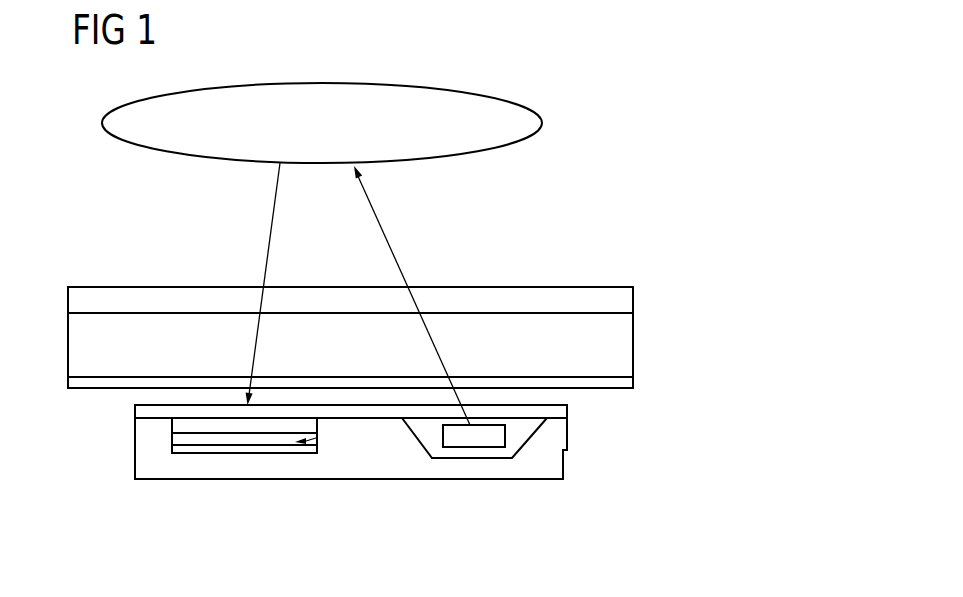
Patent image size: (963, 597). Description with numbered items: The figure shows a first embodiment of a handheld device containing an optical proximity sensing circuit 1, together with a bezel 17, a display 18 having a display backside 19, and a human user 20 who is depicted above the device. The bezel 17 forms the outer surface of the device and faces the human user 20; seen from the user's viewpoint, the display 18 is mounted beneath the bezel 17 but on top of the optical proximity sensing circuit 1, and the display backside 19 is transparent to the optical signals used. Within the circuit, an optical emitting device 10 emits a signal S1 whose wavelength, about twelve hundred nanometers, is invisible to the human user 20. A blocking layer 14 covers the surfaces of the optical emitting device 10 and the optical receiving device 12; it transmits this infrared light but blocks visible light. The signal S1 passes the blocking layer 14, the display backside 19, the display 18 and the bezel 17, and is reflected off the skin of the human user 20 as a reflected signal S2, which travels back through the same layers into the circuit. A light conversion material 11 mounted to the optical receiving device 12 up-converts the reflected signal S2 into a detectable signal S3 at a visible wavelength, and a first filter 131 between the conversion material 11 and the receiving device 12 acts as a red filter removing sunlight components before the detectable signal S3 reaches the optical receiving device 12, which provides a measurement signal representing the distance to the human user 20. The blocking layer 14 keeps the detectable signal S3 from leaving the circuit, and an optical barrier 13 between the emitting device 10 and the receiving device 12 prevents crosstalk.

The optical proximity sensing circuit 1 is at (598, 452).
The optical emitting device 10 is at (472, 450).
The light conversion material 11 is at (175, 422).
The optical receiving device 12 is at (230, 448).
The first filter 131 is at (200, 437).
The optical barrier 13 is at (396, 467).
The blocking layer 14 is at (558, 410).
The bezel 17 is at (634, 300).
The display 18 is at (633, 345).
The display backside 19 is at (633, 380).
The human user 20 is at (543, 122).
The signal S1 is at (403, 266).
The reflected signal S2 is at (274, 240).
The detectable signal S3 is at (318, 448).